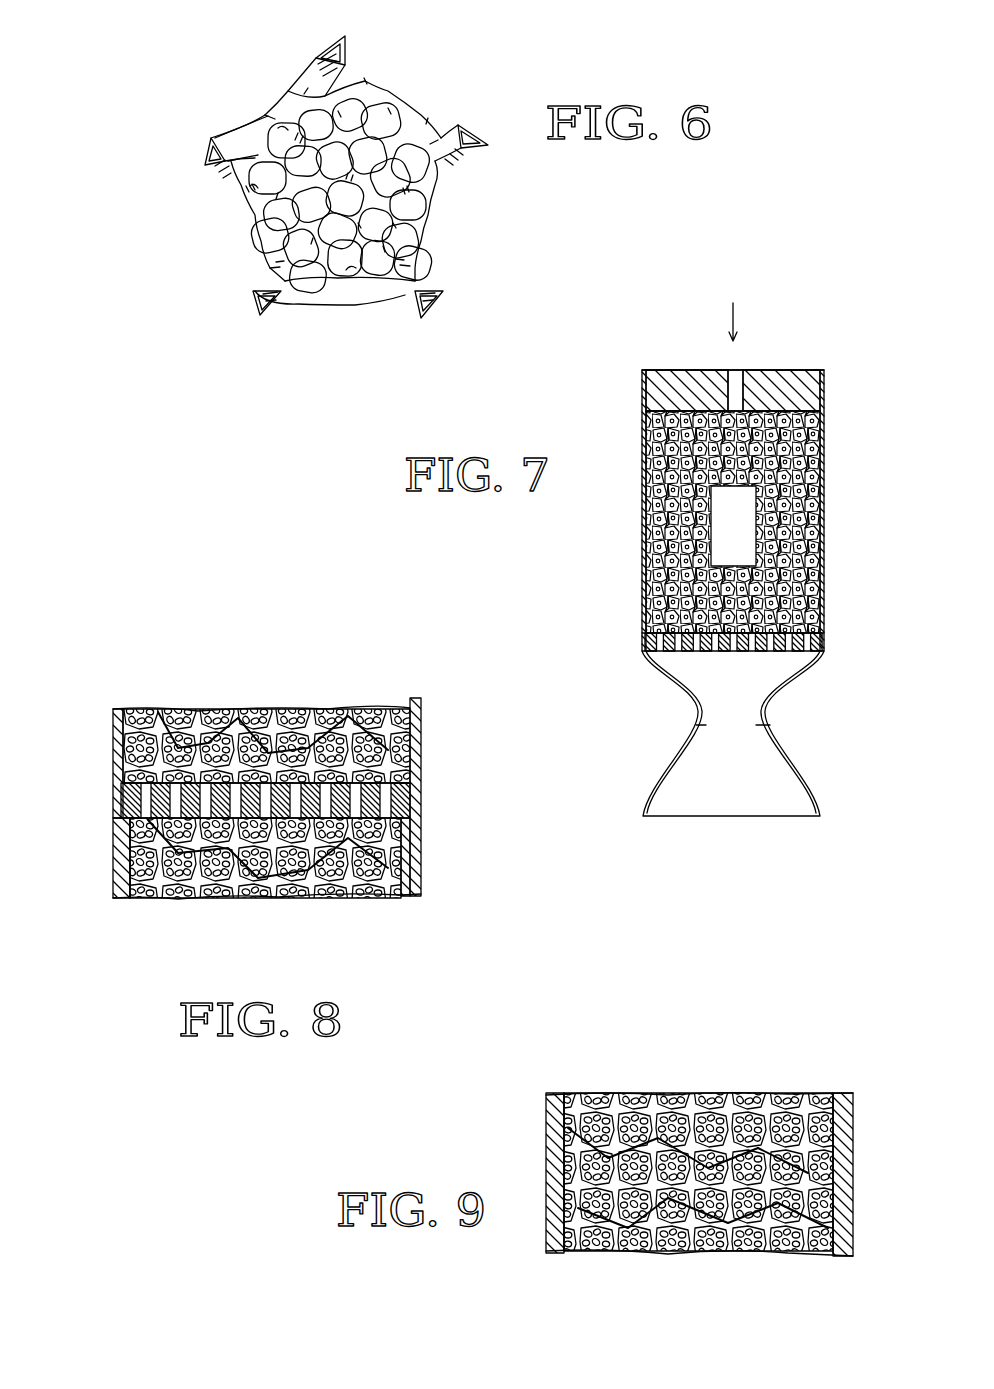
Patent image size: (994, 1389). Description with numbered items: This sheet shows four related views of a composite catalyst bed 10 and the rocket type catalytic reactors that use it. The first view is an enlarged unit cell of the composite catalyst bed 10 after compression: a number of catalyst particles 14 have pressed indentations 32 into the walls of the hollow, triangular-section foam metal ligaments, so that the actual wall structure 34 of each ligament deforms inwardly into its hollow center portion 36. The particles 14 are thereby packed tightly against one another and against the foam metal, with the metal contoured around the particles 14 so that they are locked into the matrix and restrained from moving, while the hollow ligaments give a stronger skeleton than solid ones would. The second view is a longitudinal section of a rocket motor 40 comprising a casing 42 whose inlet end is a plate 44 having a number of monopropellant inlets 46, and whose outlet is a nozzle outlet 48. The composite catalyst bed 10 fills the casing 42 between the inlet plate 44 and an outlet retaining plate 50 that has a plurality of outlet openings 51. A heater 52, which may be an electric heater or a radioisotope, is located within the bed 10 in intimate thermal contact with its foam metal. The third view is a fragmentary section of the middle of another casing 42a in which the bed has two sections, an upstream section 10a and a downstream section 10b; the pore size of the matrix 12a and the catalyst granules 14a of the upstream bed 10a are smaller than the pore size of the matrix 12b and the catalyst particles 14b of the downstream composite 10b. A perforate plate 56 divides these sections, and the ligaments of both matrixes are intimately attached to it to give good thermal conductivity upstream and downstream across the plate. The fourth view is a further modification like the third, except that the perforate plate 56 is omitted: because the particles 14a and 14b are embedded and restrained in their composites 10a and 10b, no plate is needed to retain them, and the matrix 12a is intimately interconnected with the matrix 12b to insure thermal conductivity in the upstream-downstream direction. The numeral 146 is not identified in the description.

In FIG. 7, the composite catalyst bed 10 is at (816, 420).
In FIG. 8, the upstream section of composite catalyst bed 10a is at (117, 740).
In FIG. 9, the upstream section of composite catalyst bed 10a is at (814, 1072).
In FIG. 8, the downstream section of composite catalyst bed 10b is at (287, 873).
In FIG. 9, the downstream section of composite catalyst bed 10b is at (798, 1263).
In FIG. 8, the foam metal matrix of upstream section 12a is at (183, 720).
In FIG. 9, the foam metal matrix of upstream section 12a is at (697, 1085).
In FIG. 8, the foam metal matrix of downstream section 12b is at (348, 867).
In FIG. 9, the foam metal matrix of downstream section 12b is at (697, 1233).
In FIG. 6, the catalyst particles 14 is at (405, 190).
In FIG. 8, the catalyst granules of upstream section 14a is at (140, 712).
In FIG. 9, the catalyst granules of upstream section 14a is at (762, 1087).
In FIG. 9, the catalyst particles of downstream section 14b is at (608, 1237).
In FIG. 8, the matrix 146 is at (197, 873).
In FIG. 6, the indentations 32 is at (275, 125).
In FIG. 6, the wall structure of ligament 34 is at (320, 38).
In FIG. 6, the hollow center portion of ligament 36 is at (262, 277).
In FIG. 7, the rocket motor 40 is at (611, 500).
In FIG. 7, the casing 42 is at (638, 430).
In FIG. 8, the casing 42a is at (408, 728).
In FIG. 7, the inlet plate 44 is at (638, 380).
In FIG. 7, the monopropellant inlets 46 is at (753, 380).
In FIG. 7, the nozzle outlet 48 is at (663, 742).
In FIG. 7, the outlet retaining plate 50 is at (677, 640).
In FIG. 7, the outlet openings 51 is at (758, 692).
In FIG. 7, the heater 52 is at (710, 538).
In FIG. 8, the perforate plate 56 is at (370, 802).